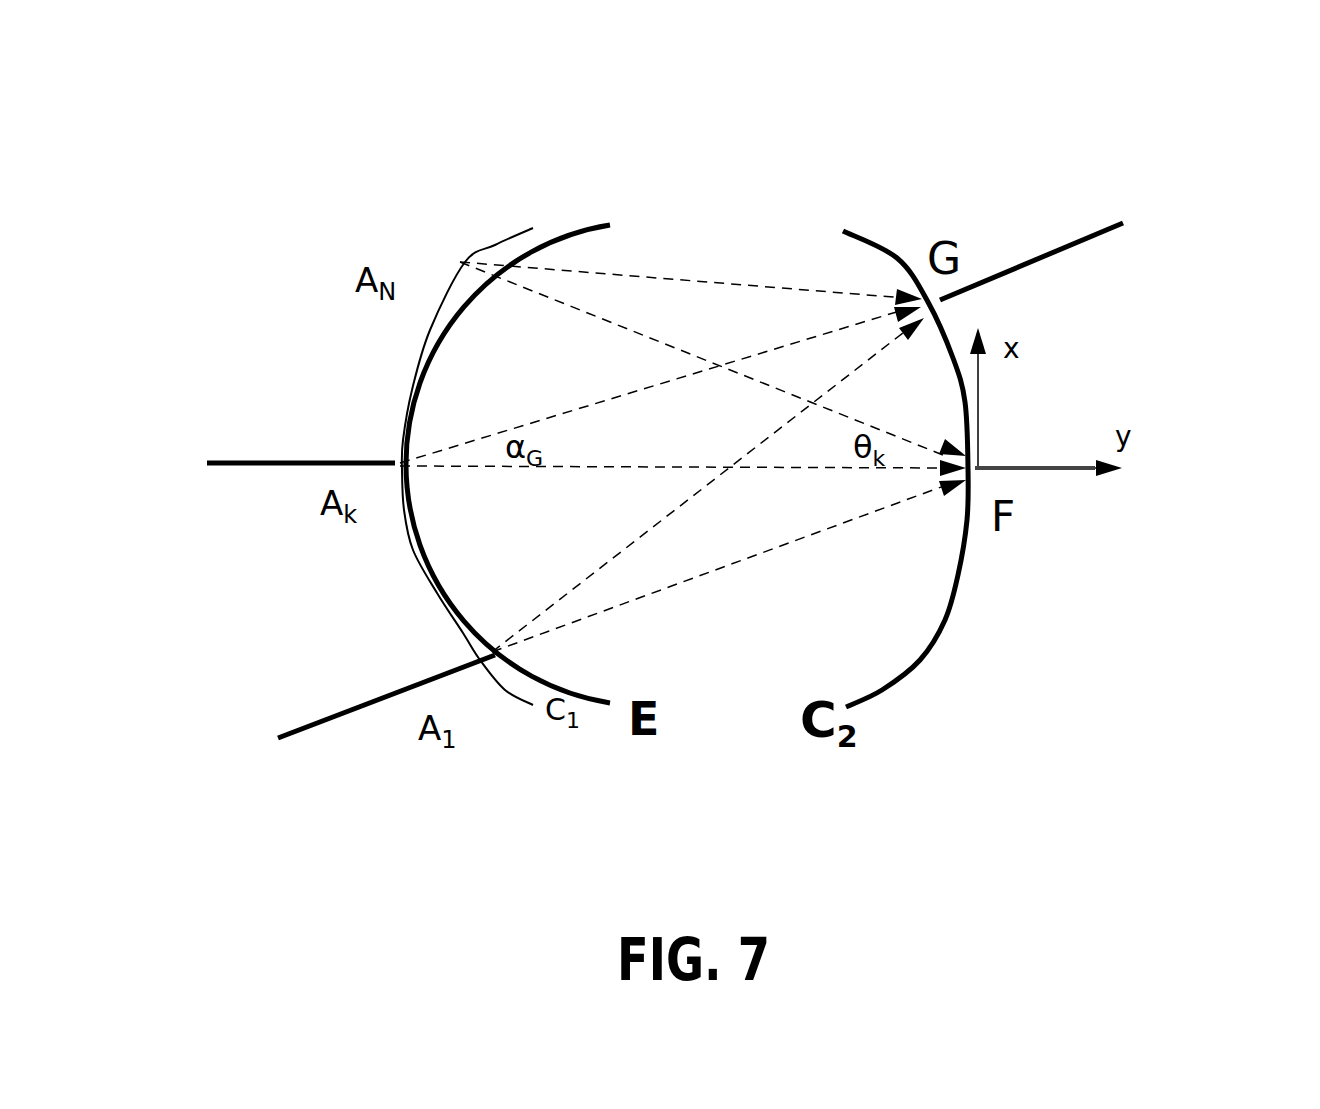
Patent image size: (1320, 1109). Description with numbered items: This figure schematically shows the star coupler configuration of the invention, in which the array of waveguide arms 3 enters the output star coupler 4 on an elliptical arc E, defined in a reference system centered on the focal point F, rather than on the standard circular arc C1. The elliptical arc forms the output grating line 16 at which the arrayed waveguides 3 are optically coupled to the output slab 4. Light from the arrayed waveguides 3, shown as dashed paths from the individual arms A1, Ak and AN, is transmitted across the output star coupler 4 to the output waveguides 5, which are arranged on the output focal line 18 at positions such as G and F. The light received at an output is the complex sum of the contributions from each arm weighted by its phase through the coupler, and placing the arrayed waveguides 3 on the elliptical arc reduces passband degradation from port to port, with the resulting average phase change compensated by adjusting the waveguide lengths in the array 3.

The array of waveguide arms 3 is at (458, 262).
The output grating line 16 is at (565, 233).
The output focal line 18 is at (850, 230).
The output waveguides 5 is at (1097, 222).
The output star coupler 4 is at (882, 797).